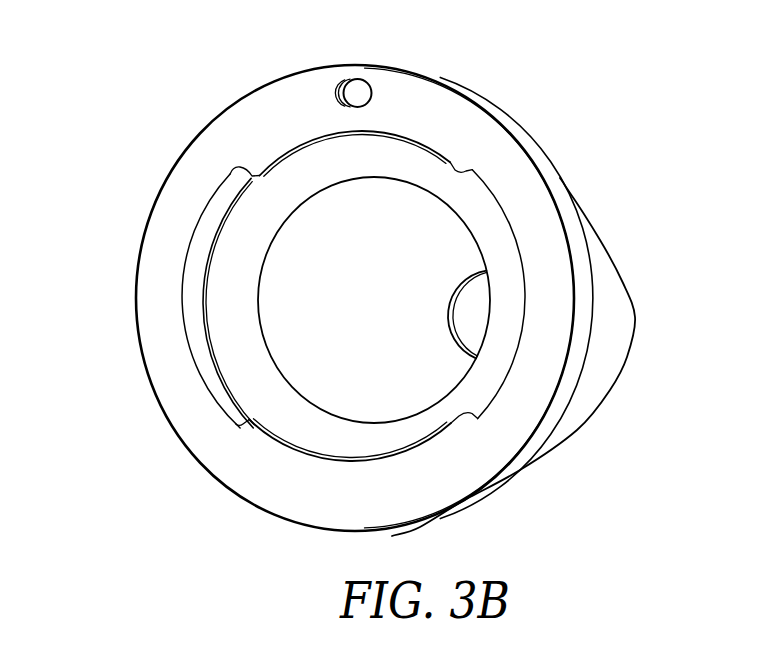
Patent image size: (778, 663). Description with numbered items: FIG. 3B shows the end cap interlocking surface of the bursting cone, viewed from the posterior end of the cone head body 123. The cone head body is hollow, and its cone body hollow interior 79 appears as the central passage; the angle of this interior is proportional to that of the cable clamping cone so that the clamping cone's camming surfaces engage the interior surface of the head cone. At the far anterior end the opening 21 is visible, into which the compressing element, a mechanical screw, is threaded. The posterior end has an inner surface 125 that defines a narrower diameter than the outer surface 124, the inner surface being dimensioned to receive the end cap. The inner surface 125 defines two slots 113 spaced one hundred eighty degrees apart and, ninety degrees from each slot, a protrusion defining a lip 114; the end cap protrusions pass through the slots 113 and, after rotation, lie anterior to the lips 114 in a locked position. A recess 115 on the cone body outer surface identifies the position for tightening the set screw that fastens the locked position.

The opening 21 is at (476, 316).
The cone body hollow interior 79 is at (347, 406).
The slots 113 is at (200, 213).
The lip 114 is at (412, 138).
The recess 115 is at (365, 81).
The posterior end of the cone head body 123 is at (557, 247).
The outer surface 124 is at (568, 347).
The inner surface 125 is at (192, 281).